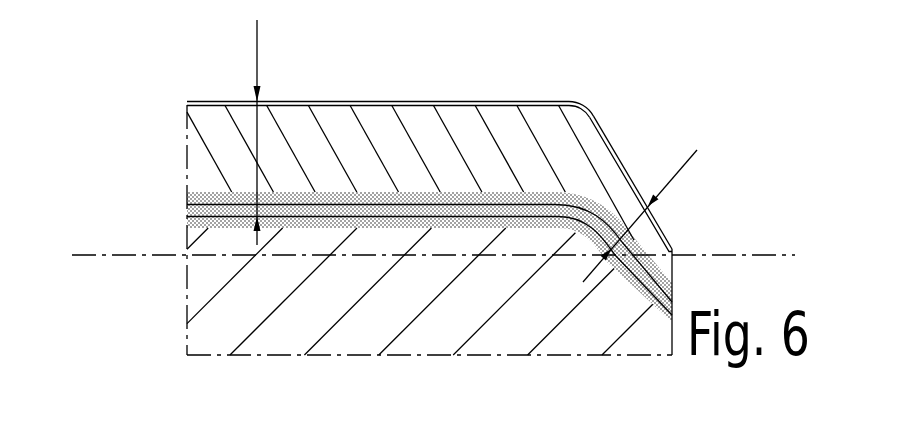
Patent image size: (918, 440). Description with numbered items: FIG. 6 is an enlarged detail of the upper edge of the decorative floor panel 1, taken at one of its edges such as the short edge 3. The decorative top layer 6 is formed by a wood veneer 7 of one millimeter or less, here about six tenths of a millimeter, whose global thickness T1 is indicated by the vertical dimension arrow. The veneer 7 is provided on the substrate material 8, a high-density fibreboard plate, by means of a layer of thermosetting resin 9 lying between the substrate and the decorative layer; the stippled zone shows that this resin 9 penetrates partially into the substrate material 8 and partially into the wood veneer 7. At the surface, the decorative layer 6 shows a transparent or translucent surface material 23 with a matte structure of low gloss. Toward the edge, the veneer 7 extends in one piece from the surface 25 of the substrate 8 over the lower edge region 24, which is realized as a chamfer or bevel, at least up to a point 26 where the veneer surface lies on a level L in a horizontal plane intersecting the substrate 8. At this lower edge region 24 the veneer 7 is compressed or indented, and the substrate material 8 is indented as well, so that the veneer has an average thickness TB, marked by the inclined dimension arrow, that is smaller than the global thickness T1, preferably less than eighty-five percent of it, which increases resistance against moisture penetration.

The floor panel 1 is at (633, 86).
The short edge 3 is at (740, 217).
The decorative top layer 6 is at (322, 101).
The wood veneer 7 is at (202, 156).
The substrate material 8 is at (363, 312).
The layer of thermosetting resin 9 is at (457, 204).
The transparent or translucent surface material 23 is at (394, 101).
The lower edge region 24 is at (711, 121).
The surface of the substrate 25 is at (518, 216).
The point 26 is at (674, 254).
The global thickness of the wood veneer T1 is at (257, 37).
The average thickness of the wood veneer on the lower edge region TB is at (664, 189).
The level L is at (108, 256).